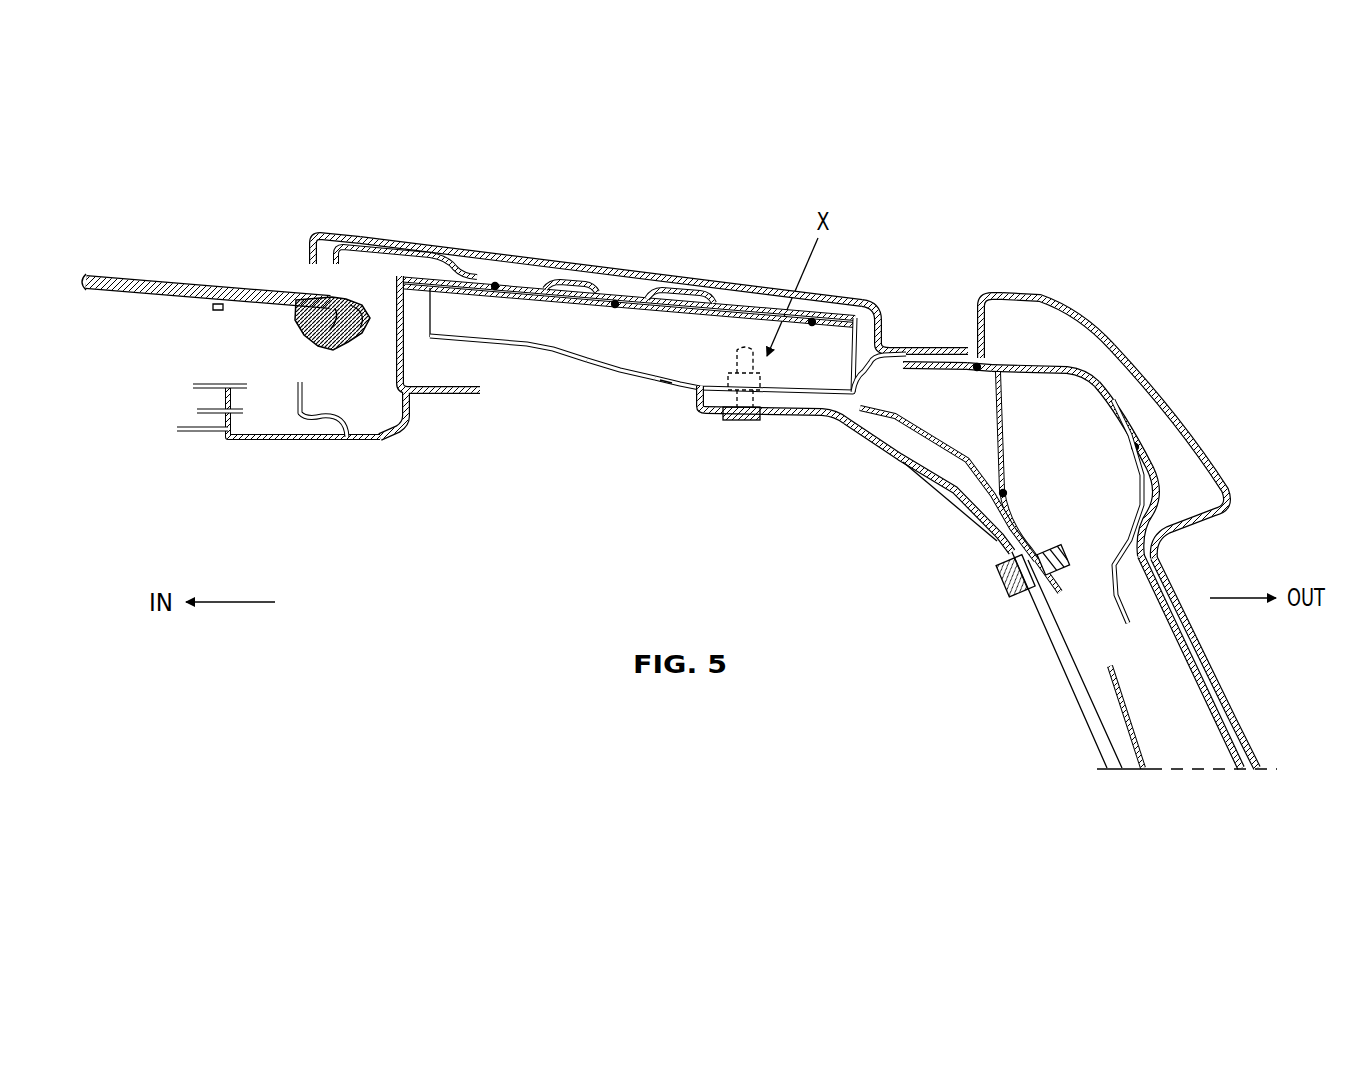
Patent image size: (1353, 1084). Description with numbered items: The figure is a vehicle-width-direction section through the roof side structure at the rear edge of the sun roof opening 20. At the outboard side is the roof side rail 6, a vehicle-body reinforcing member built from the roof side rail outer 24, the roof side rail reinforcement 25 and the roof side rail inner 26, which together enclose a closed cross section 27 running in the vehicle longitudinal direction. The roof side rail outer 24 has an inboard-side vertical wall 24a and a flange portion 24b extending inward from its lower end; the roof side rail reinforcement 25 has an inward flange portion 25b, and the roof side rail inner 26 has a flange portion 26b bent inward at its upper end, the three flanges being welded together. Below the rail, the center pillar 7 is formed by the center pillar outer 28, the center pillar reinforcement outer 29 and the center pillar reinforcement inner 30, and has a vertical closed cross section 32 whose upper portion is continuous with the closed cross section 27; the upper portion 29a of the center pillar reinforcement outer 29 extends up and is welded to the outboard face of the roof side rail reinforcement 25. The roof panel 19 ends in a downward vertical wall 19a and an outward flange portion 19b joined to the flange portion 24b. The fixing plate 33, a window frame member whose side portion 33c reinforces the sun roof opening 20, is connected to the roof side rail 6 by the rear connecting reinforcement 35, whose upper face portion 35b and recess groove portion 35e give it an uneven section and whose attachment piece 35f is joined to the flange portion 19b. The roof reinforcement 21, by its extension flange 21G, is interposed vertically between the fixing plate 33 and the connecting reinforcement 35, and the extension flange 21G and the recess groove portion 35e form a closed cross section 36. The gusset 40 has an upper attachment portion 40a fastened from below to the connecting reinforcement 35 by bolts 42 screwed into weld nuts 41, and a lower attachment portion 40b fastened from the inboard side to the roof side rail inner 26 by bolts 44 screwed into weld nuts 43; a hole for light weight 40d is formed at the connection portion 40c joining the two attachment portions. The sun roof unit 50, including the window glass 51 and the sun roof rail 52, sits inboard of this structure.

The roof side rail 6 is at (1101, 326).
The center pillar 7 is at (1248, 703).
The roof panel 19 is at (617, 254).
The vertical wall 19a is at (879, 322).
The flange portion 19b is at (930, 345).
The sun roof opening 20 is at (219, 252).
The roof reinforcement 21 is at (689, 298).
The extension flange 21G is at (700, 303).
The roof side rail outer 24 is at (1137, 390).
The vertical wall 24a is at (994, 296).
The flange portion 24b is at (921, 362).
The roof side rail reinforcement 25 is at (1043, 364).
The flange portion 25b is at (958, 368).
The roof side rail inner 26 is at (1007, 443).
The flange portion 26b is at (988, 430).
The closed cross section 27 is at (1085, 487).
The center pillar outer 28 is at (1217, 672).
The center pillar reinforcement outer 29 is at (1233, 733).
The upper portion 29a is at (1131, 424).
The center pillar reinforcement inner 30 is at (1118, 708).
The closed cross section 32 is at (1185, 740).
The fixing plate 33 is at (349, 232).
The side portion 33c is at (466, 268).
The rear connecting reinforcement 35 is at (583, 365).
The upper face portion 35b is at (525, 298).
The recess groove portion 35e is at (623, 374).
The attachment piece 35f is at (862, 357).
The closed cross section 36 is at (682, 362).
The gusset 40 is at (862, 457).
The upper attachment portion 40a is at (705, 392).
The lower attachment portion 40b is at (1044, 600).
The connection portion 40c is at (842, 430).
The hole for light weight 40d is at (908, 484).
The nut 41 is at (730, 375).
The bolt 42 is at (749, 422).
The nut 43 is at (1056, 545).
The bolt 44 is at (1000, 578).
The sun roof unit 50 is at (427, 429).
The window glass 51 is at (141, 270).
The sun roof rail 52 is at (267, 442).